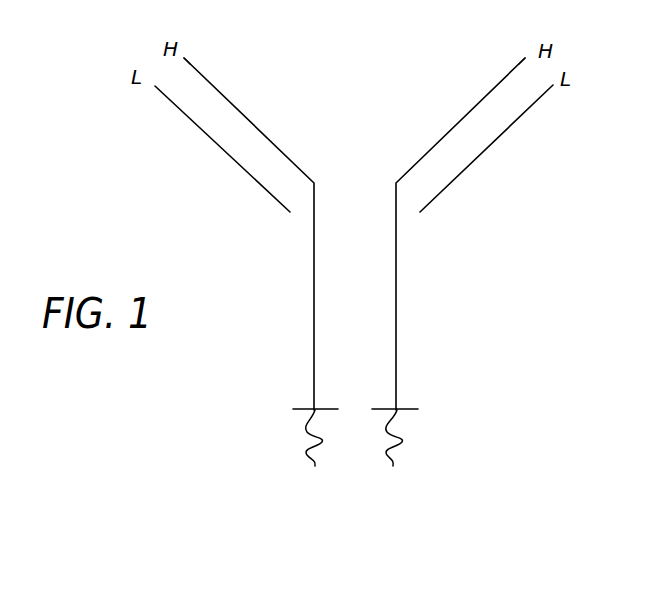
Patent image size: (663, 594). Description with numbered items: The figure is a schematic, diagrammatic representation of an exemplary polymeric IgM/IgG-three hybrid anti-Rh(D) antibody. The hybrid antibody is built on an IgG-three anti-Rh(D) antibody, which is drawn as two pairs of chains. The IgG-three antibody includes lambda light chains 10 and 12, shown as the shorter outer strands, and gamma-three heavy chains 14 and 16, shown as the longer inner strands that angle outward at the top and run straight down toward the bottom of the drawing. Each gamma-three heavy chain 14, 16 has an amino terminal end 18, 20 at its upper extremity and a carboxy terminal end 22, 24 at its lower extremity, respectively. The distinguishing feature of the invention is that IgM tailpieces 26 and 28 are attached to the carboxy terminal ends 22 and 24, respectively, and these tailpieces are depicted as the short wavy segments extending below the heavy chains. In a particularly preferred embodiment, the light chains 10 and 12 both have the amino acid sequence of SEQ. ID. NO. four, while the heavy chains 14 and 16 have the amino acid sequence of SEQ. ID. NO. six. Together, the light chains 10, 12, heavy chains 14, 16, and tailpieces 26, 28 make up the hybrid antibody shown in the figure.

The lambda light chain 10 is at (513, 123).
The lambda light chain 12 is at (210, 138).
The gamma-3 heavy chain 14 is at (265, 136).
The gamma-3 heavy chain 16 is at (458, 120).
The amino terminal end 18 is at (185, 58).
The amino terminal end 20 is at (527, 55).
The carboxy terminal end 22 is at (315, 408).
The carboxy terminal end 24 is at (395, 408).
The IgM tailpiece 26 is at (307, 436).
The IgM tailpiece 28 is at (398, 446).